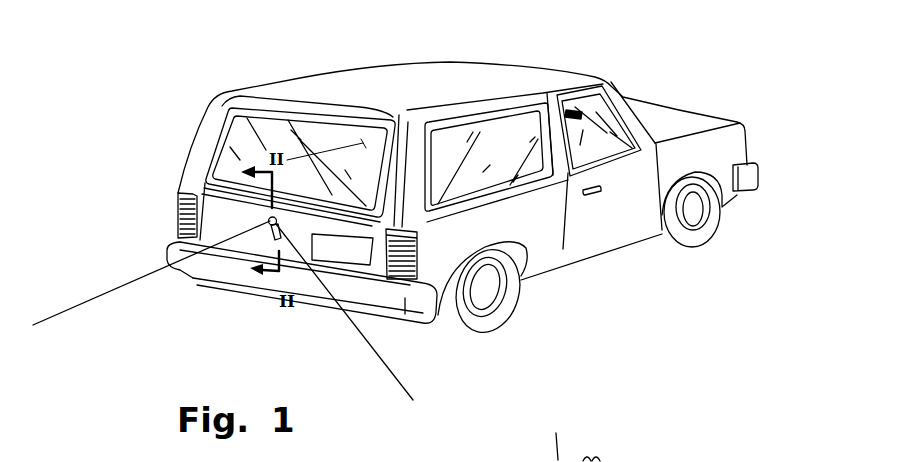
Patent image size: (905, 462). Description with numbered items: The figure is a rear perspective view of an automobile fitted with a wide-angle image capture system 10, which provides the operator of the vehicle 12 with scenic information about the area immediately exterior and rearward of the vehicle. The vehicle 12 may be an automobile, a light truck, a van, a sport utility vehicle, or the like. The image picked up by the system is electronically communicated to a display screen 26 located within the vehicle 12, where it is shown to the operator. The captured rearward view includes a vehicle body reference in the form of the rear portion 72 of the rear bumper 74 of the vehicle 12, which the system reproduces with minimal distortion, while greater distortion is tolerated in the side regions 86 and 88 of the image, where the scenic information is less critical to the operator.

The wide-angle image capture system 10 is at (238, 215).
The vehicle 12 is at (433, 72).
The display screen 26 is at (587, 118).
The rear portion 72 is at (313, 296).
The rear bumper 74 is at (434, 308).
The side region 86 is at (88, 303).
The side region 88 is at (365, 342).